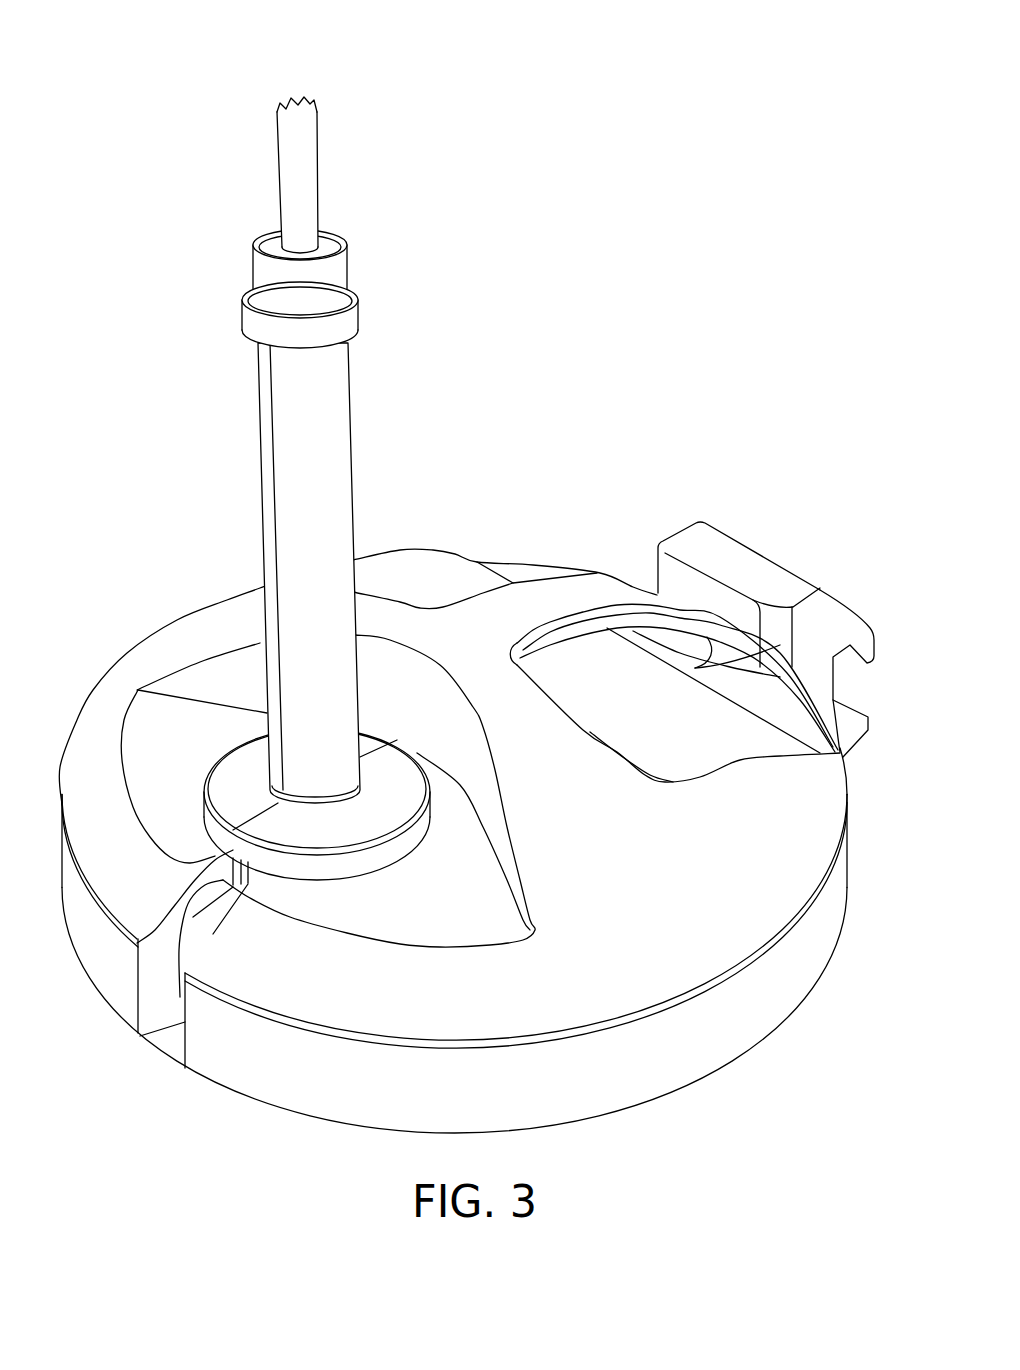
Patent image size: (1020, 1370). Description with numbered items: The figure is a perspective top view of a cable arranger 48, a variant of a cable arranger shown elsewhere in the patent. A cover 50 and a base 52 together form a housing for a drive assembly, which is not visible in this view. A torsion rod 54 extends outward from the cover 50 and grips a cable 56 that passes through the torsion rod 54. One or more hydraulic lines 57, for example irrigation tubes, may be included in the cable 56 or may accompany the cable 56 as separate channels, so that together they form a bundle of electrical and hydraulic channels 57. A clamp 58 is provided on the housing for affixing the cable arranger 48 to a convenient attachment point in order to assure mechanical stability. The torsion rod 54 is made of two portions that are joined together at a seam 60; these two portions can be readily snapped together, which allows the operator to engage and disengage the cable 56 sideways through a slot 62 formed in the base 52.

The cable arranger 48 is at (474, 583).
The cover 50 is at (833, 792).
The base 52 is at (454, 972).
The torsion rod 54 is at (253, 516).
The cable 56 is at (346, 135).
The hydraulic lines 57 is at (293, 102).
The clamp 58 is at (747, 547).
The seam 60 is at (267, 397).
The slot 62 is at (178, 1048).